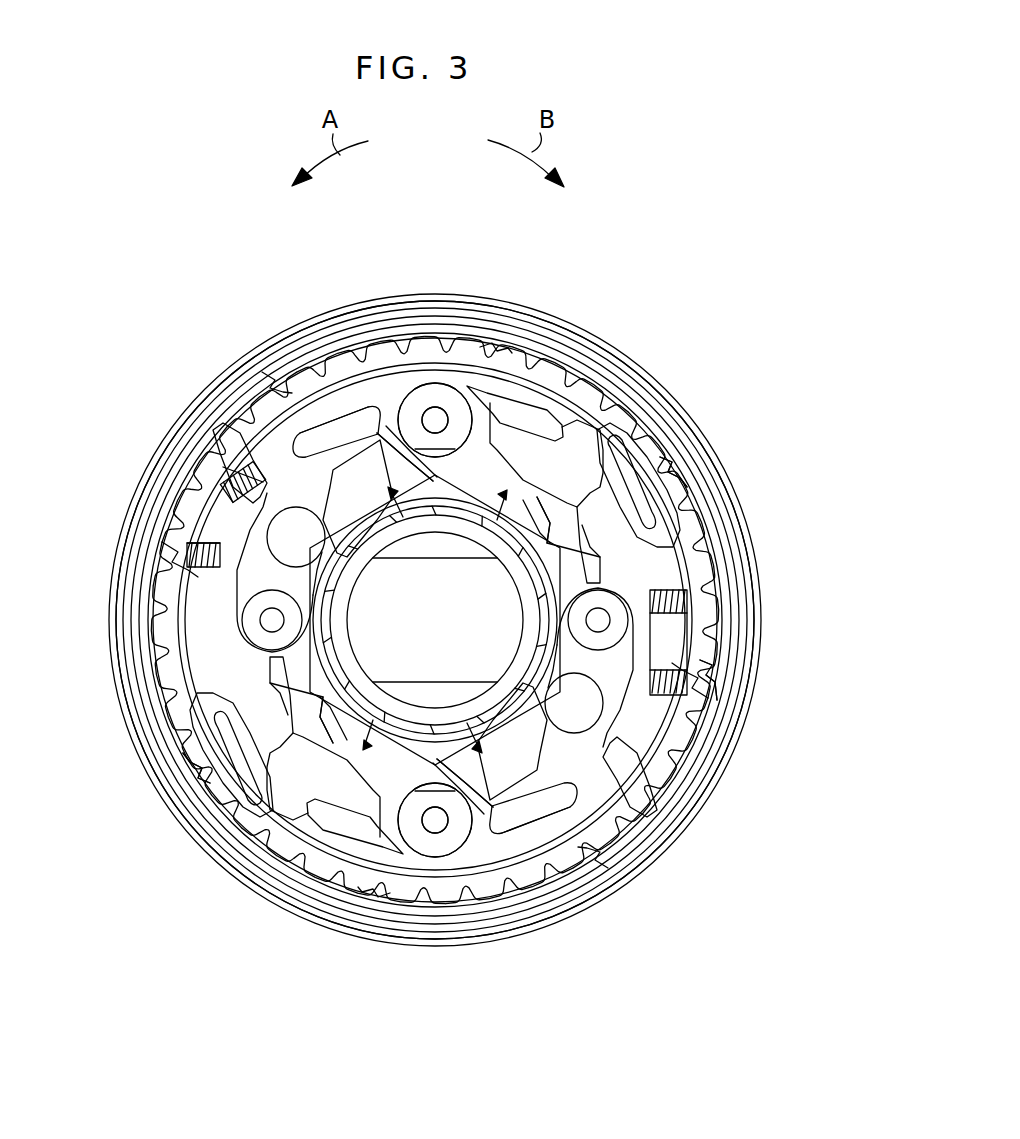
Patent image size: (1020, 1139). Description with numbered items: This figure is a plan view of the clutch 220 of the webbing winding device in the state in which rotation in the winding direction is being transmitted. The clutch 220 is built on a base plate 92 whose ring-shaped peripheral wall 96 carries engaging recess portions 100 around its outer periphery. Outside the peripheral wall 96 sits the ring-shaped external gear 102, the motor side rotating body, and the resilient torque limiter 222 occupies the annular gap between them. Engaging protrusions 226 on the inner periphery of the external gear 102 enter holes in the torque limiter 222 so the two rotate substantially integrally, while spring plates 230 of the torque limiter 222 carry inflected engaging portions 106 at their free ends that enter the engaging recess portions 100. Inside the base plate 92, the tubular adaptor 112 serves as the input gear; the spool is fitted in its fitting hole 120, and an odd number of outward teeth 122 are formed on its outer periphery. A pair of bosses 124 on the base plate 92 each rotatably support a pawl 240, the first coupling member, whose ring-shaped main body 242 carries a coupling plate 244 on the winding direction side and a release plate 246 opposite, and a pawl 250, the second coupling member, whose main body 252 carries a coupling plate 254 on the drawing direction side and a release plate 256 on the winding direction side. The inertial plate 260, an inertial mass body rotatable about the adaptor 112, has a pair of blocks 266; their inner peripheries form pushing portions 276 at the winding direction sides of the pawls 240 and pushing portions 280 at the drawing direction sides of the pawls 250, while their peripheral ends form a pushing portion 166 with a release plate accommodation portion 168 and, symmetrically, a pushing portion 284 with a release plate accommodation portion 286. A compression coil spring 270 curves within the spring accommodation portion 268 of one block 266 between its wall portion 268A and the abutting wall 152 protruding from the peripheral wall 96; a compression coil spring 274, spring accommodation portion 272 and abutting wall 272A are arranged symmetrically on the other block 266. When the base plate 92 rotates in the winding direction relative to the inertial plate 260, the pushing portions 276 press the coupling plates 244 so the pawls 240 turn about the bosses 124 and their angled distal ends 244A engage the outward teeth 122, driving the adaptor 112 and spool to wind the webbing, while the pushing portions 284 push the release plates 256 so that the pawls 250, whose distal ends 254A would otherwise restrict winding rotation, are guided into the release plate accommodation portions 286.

The clutch 220 is at (678, 305).
The peripheral wall 96 is at (718, 797).
The base plate 92 is at (435, 620).
The torque limiter 222 is at (712, 725).
The engaging recess portions 100 is at (200, 478).
The external gear 102 is at (752, 565).
The engaging protrusions 226 is at (476, 325).
The engaging portions 106 is at (508, 345).
The spring plates 230 is at (336, 350).
The adaptor 112 is at (477, 512).
The fitting hole 120 is at (430, 533).
The pawl 240 is at (417, 520).
The pawl 250 is at (517, 560).
The outward teeth 122 is at (423, 512).
The coupling plate 244 is at (372, 560).
The pushing portion 284 is at (418, 398).
The bosses 124 is at (434, 405).
The main body 252 is at (456, 383).
The main body 242 is at (390, 395).
The release plate accommodation portion 286 is at (352, 400).
The release plate 256 is at (322, 398).
The coupling plate 254 is at (533, 547).
The release plate 246 is at (580, 402).
The distal end 244A is at (190, 497).
The distal end 254A is at (712, 583).
The pushing portions 280 is at (271, 598).
The pushing portions 276 is at (318, 498).
The pushing portion 166 is at (665, 445).
The release plate accommodation portion 168 is at (705, 558).
The abutting wall 152 is at (112, 655).
The spring accommodation portion 268 is at (185, 520).
The wall portion 268A is at (215, 465).
The compression coil spring 270 is at (162, 545).
The blocks 266 is at (700, 625).
The inertial plate 260 is at (445, 666).
The spring accommodation portion 272 is at (710, 690).
The abutting wall 272A is at (705, 668).
The compression coil spring 274 is at (720, 680).